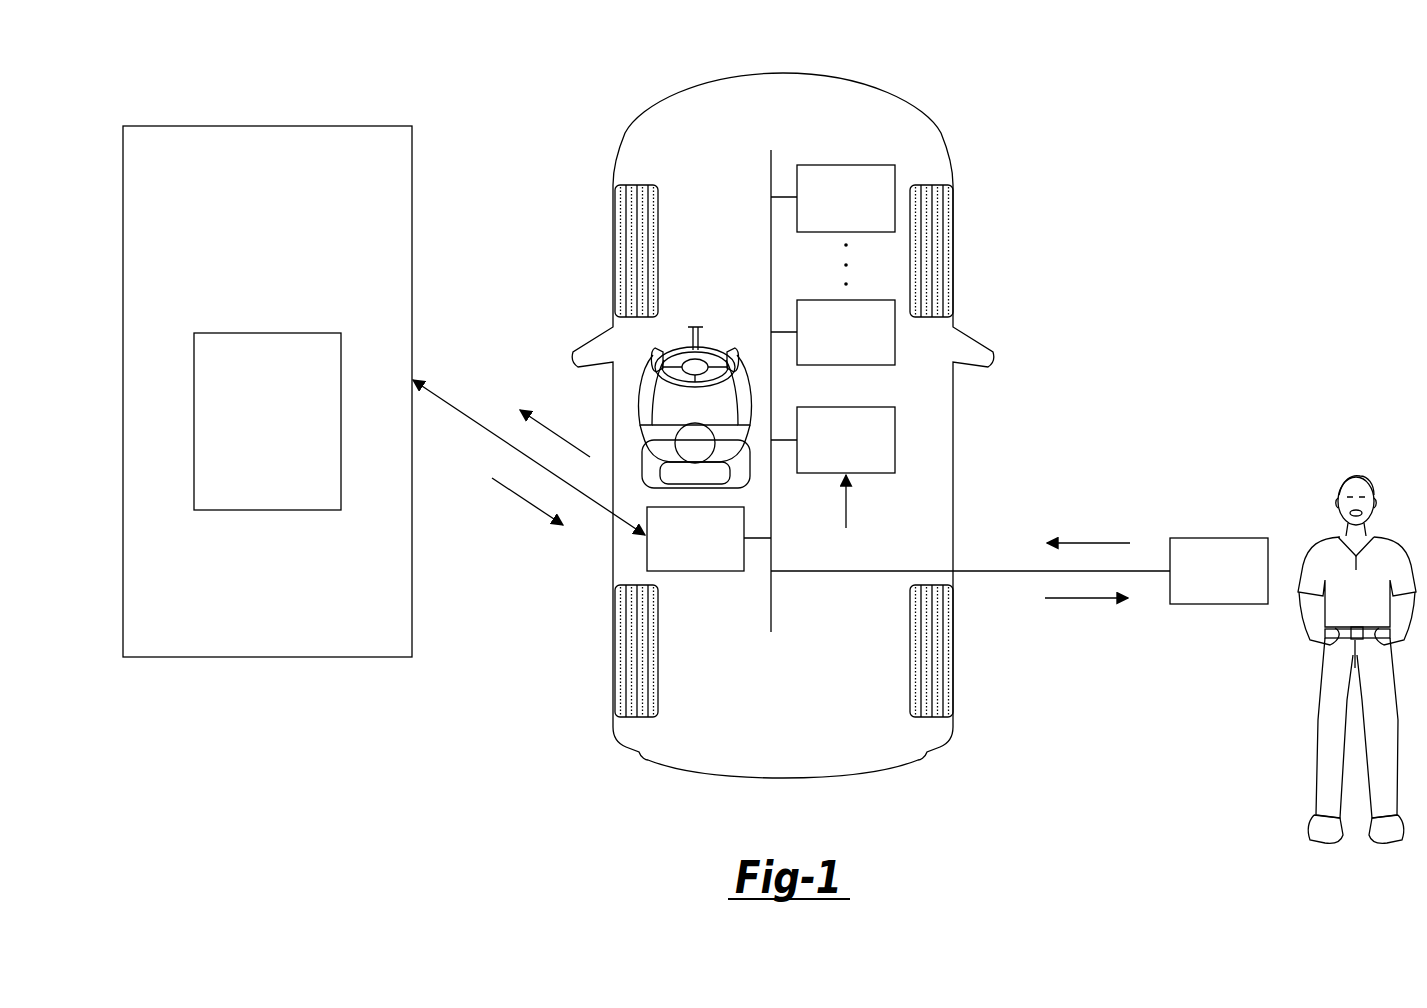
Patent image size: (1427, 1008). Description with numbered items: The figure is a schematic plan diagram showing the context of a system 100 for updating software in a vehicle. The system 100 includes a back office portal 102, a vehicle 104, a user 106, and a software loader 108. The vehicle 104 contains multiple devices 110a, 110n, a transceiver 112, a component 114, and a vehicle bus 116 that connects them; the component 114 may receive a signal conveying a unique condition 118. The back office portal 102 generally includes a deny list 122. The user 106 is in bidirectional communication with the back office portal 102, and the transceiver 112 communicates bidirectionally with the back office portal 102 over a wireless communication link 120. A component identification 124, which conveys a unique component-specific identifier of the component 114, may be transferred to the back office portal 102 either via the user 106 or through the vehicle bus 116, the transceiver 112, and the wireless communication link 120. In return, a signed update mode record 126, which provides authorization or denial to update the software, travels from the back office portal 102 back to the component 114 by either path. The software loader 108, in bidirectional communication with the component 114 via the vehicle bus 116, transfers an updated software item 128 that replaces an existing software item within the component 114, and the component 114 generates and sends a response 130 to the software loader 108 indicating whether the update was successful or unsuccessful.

The system 100 is at (638, 57).
The back office portal 102 is at (268, 126).
The vehicle 104 is at (625, 133).
The user 106 is at (1355, 475).
The software loader 108 is at (1220, 538).
The device 110a is at (797, 185).
The device 110n is at (797, 318).
The transceiver 112 is at (697, 571).
The component 114 is at (895, 445).
The vehicle bus 116 is at (771, 255).
The unique condition 118 is at (858, 512).
The wireless communication link 120 is at (468, 413).
The deny list 122 is at (268, 333).
The component identification 124 is at (563, 437).
The signed update mode record 126 is at (519, 498).
The updated software item 128 is at (1088, 543).
The response 130 is at (1088, 598).